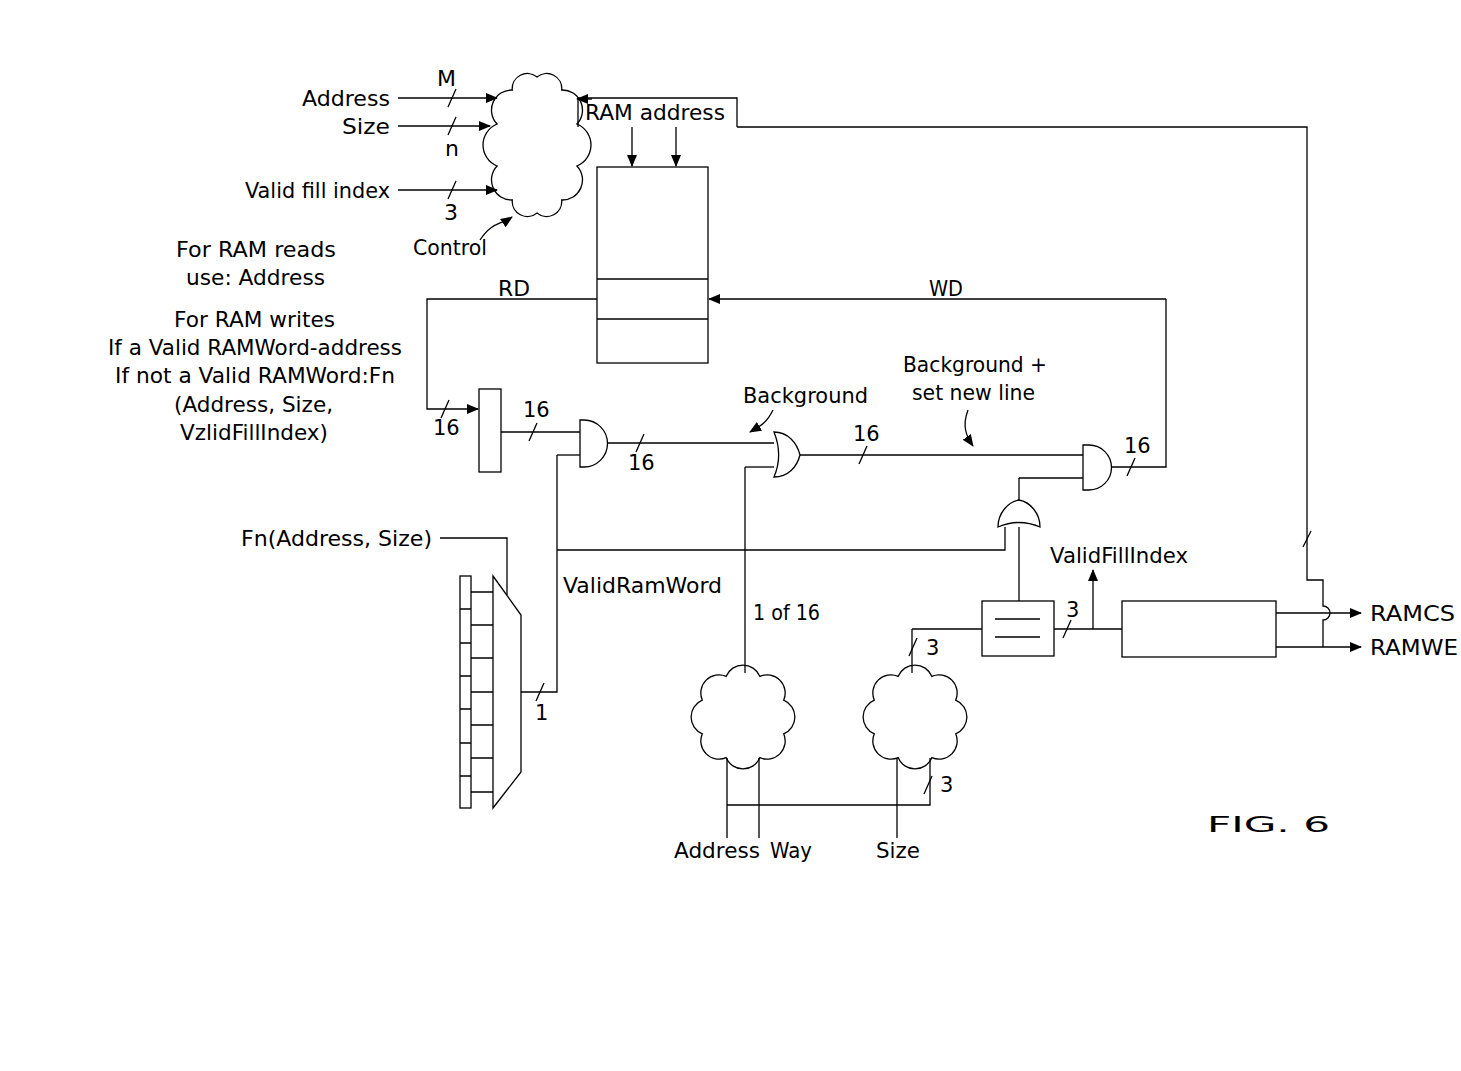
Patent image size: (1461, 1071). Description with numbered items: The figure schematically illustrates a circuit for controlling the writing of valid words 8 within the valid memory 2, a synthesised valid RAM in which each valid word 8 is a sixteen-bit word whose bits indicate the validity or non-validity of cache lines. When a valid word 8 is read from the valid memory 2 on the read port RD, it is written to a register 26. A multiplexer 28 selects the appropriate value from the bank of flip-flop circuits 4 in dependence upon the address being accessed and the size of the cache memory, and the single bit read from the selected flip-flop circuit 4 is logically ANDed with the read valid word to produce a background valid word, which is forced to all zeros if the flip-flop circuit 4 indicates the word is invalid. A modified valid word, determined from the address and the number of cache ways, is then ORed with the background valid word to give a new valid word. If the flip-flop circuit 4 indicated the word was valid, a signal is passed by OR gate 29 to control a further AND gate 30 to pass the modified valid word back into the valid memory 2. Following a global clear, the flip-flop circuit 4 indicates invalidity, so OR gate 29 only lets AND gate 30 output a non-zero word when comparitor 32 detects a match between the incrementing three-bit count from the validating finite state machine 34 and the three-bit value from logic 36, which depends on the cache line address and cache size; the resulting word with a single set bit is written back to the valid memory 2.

The valid memory 2 is at (708, 178).
The valid word 8 is at (708, 283).
The register 26 is at (478, 462).
The flip-flop circuit 4 is at (460, 592).
The multiplexer 28 is at (505, 788).
The OR gate 29 is at (997, 524).
The AND gate 30 is at (1090, 443).
The comparitor 32 is at (1032, 657).
The validating finite state machine 34 is at (1255, 657).
The logic 36 is at (871, 718).